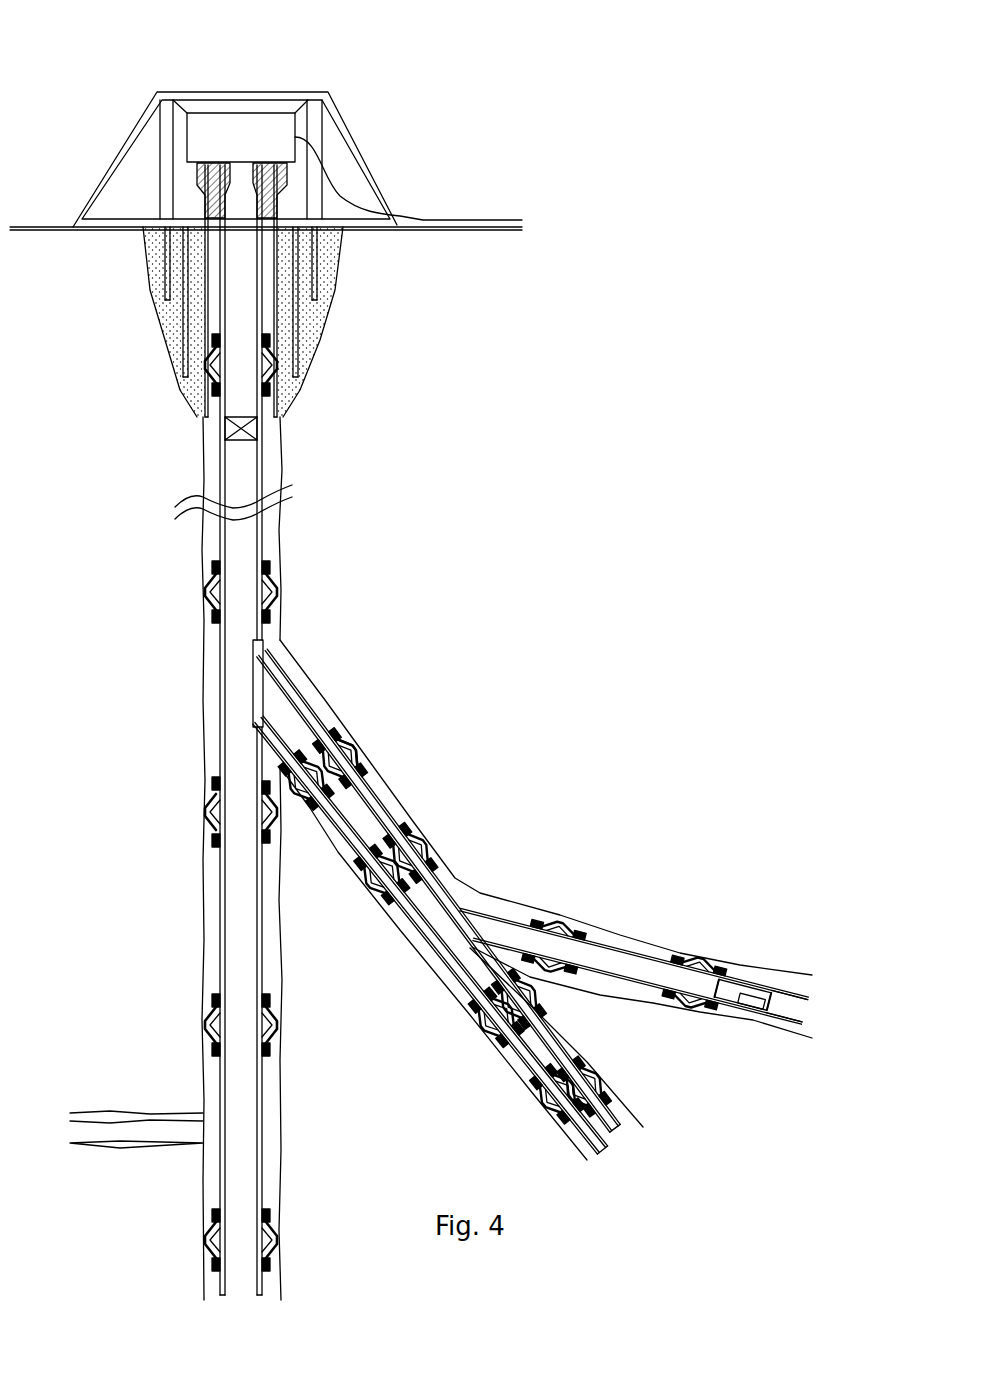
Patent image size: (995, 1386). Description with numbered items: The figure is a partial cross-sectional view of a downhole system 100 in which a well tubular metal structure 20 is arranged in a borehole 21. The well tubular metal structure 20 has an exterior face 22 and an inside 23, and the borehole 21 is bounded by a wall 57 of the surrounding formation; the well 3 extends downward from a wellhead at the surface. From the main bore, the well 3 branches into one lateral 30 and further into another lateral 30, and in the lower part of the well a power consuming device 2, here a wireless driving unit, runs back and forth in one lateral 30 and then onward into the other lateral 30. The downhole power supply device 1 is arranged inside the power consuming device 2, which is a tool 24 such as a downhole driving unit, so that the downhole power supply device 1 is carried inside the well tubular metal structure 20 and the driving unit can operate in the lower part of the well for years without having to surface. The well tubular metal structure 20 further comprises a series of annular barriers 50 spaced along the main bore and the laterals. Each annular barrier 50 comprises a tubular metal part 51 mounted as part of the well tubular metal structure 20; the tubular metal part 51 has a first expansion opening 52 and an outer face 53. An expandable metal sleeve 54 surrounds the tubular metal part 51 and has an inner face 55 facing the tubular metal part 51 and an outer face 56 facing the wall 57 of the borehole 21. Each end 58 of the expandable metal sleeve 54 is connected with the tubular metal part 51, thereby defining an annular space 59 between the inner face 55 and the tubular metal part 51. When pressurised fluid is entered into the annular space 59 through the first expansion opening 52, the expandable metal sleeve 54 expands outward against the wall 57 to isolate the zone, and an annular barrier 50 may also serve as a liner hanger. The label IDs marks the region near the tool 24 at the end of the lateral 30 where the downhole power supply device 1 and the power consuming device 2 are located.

The downhole system 100 is at (441, 84).
The well 3 is at (494, 167).
The well tubular metal structure 20 is at (263, 460).
The borehole 21 is at (207, 450).
The exterior face 22 is at (262, 482).
The inside 23 is at (238, 482).
The wall of the borehole 57 is at (207, 542).
The lateral 30 is at (373, 803).
The annular barrier 50 is at (270, 352).
The tubular metal part 51 is at (207, 807).
The first expansion opening 52 is at (347, 747).
The outer face 53 is at (278, 1038).
The expandable metal sleeve 54 is at (208, 833).
The inner face 55 is at (213, 1028).
The outer face 56 is at (275, 1012).
The end 58 is at (217, 783).
The annular space 59 is at (477, 1023).
The downhole power supply device 1 is at (735, 1017).
The tool 24 is at (757, 1015).
The power consuming device 2 is at (780, 1020).
The inductive/identification sensor IDs is at (787, 1013).